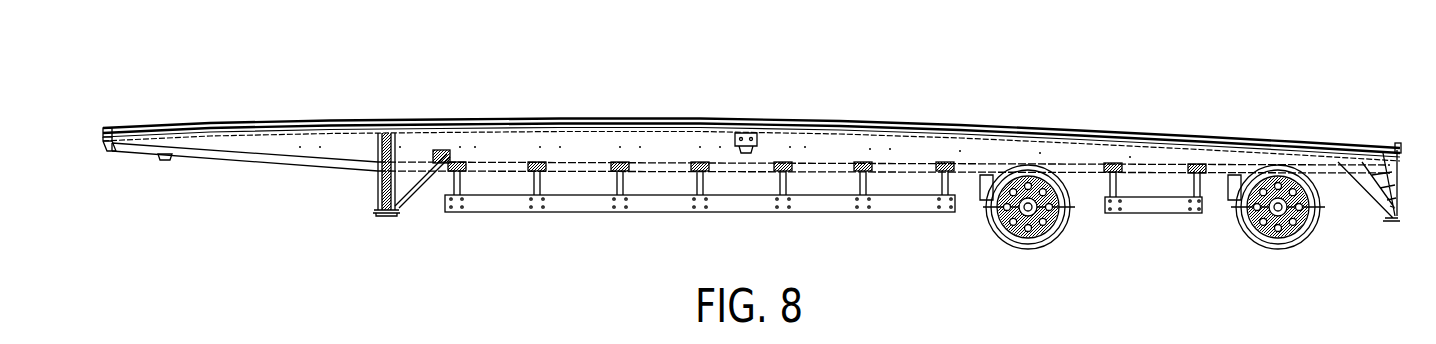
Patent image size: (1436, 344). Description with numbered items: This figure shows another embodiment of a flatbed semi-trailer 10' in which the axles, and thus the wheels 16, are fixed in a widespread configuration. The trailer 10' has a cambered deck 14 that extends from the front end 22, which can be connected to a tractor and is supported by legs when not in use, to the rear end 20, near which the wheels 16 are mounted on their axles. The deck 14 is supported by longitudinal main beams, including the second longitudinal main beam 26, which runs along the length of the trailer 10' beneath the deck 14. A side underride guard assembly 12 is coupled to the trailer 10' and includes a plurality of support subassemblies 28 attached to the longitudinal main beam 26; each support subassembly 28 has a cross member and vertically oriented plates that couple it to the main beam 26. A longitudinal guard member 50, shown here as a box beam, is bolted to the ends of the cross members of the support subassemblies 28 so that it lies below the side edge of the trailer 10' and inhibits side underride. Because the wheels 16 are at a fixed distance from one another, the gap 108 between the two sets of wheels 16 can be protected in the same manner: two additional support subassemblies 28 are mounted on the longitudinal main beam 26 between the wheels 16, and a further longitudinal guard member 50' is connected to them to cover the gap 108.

The trailer 10' is at (751, 122).
The side underride guard assembly 12 is at (533, 222).
The deck 14 is at (748, 121).
The wheels 16 is at (1027, 251).
The rear end 20 is at (1402, 140).
The front end 22 is at (106, 122).
The second longitudinal main beam 26 is at (817, 168).
The support subassemblies 28 is at (1128, 206).
The second longitudinal guard member 50 is at (700, 233).
The longitudinal guard member 50' is at (1153, 251).
The gap 108 is at (1160, 192).